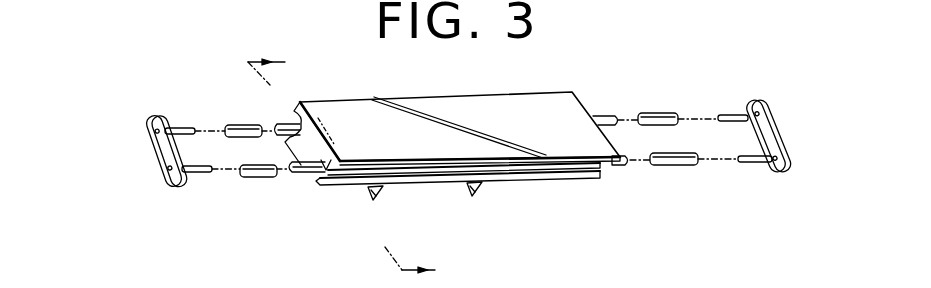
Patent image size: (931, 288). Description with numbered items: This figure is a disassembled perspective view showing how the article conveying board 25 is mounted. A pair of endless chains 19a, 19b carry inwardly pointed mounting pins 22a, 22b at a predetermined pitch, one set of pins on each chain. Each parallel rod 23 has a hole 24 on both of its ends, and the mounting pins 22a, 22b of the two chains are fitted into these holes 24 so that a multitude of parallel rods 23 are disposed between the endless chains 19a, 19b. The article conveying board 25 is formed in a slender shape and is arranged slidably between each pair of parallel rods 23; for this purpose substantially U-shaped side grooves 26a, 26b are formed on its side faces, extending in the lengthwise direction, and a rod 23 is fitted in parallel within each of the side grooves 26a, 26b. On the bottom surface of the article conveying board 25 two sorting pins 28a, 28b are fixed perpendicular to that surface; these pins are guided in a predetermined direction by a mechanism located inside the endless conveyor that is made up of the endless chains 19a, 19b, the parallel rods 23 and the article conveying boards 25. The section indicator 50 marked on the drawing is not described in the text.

The endless chain 19a is at (774, 122).
The endless chain 19b is at (160, 156).
The mounting pin 22a is at (742, 158).
The mounting pin 22b is at (210, 167).
The parallel rod 23 is at (622, 156).
The hole 24 is at (241, 177).
The article conveying board 25 is at (475, 103).
The side groove 26a is at (323, 187).
The side groove 26b is at (289, 120).
The sorting pin 28a is at (478, 193).
The sorting pin 28b is at (382, 195).
The section line 50 is at (359, 166).